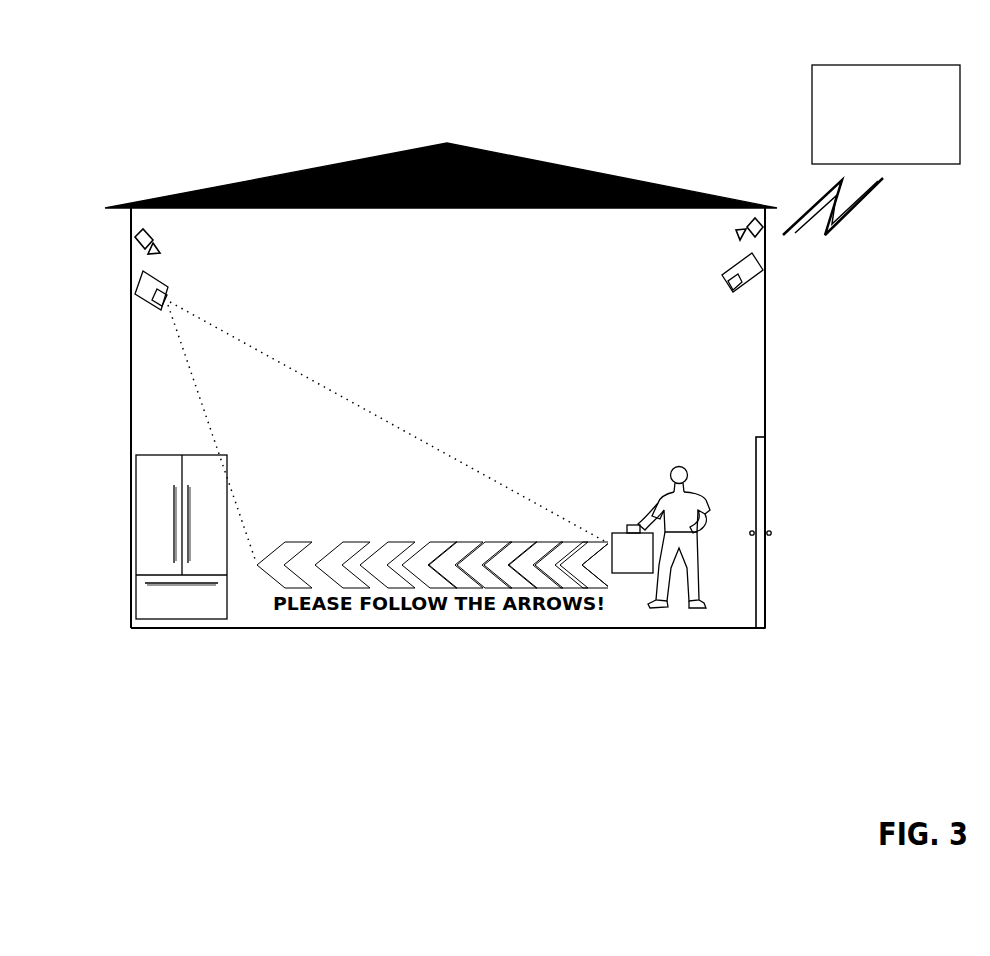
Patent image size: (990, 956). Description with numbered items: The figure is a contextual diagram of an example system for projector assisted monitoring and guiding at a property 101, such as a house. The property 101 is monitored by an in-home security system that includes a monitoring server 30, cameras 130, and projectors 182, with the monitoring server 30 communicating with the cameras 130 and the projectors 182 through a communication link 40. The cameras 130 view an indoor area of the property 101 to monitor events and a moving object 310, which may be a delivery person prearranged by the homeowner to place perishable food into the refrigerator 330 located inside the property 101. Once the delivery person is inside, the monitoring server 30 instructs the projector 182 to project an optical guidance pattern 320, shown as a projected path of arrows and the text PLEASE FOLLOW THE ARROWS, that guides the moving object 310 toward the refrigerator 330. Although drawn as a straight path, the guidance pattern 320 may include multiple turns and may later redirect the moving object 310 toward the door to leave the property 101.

The property 101 is at (605, 172).
The monitoring server 30 is at (847, 76).
The communication link 40 is at (878, 184).
The cameras 130 is at (153, 236).
The projectors 182 is at (160, 284).
The refrigerator 330 is at (210, 462).
The moving object 310 is at (673, 470).
The optical guidance pattern 320 is at (597, 577).